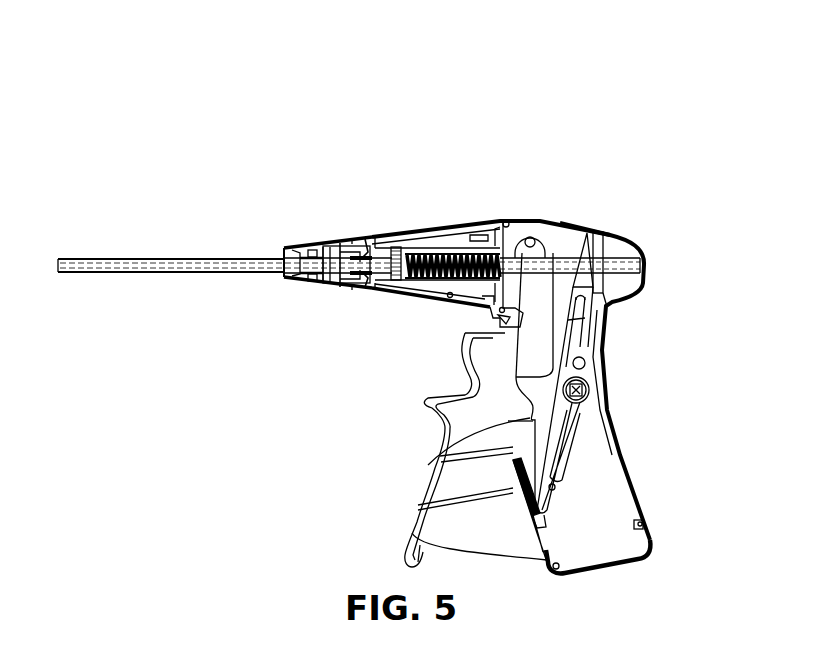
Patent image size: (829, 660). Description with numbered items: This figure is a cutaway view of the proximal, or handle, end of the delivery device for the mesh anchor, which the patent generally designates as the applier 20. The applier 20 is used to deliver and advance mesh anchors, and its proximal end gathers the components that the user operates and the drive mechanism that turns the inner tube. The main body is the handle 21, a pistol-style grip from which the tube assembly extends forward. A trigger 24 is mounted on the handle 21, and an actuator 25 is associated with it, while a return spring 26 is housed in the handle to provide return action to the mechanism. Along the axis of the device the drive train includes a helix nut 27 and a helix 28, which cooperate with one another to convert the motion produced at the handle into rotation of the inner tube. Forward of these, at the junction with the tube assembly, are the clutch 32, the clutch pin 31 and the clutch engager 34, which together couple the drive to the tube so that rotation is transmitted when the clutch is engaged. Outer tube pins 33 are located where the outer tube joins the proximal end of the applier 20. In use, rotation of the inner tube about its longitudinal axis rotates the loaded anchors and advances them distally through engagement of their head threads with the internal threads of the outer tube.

The applier 20 is at (369, 157).
The handle 21 is at (582, 215).
The trigger 24 is at (440, 417).
The actuator 25 is at (592, 348).
The return spring 26 is at (622, 455).
The helix nut 27 is at (513, 217).
The helix 28 is at (445, 250).
The clutch pin 31 is at (374, 280).
The clutch 32 is at (355, 240).
The outer tube pins 33 is at (330, 288).
The clutch engager 34 is at (413, 242).